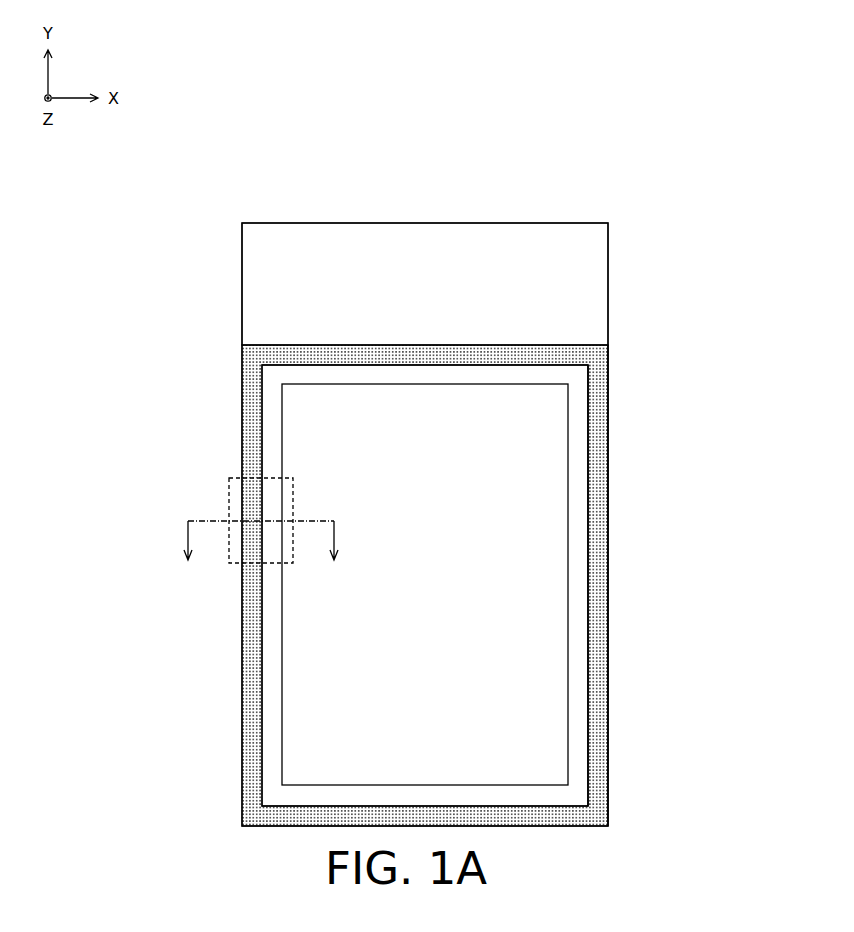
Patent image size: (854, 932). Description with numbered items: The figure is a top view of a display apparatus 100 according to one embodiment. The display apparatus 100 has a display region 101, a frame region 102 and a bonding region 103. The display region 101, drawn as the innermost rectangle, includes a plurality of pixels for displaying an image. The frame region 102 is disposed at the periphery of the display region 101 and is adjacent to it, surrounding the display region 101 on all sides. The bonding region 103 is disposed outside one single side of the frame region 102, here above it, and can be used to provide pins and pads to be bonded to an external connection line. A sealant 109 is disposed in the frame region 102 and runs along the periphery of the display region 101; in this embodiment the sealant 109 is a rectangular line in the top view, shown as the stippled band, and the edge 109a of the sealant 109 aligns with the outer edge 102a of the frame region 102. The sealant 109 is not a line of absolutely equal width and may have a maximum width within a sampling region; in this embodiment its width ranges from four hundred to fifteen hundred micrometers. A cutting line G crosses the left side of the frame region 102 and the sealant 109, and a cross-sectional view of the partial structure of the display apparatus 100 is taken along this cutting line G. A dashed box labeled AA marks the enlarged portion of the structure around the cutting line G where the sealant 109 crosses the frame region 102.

The display apparatus 100 is at (227, 200).
The display region 101 is at (445, 694).
The frame region 102 is at (574, 706).
The outer edge of the frame region 102a is at (608, 583).
The bonding region 103 is at (575, 281).
The sealant 109 is at (598, 660).
The edge of the sealant 109a is at (608, 519).
The enlarged region AA is at (229, 480).
The cutting line G is at (261, 555).